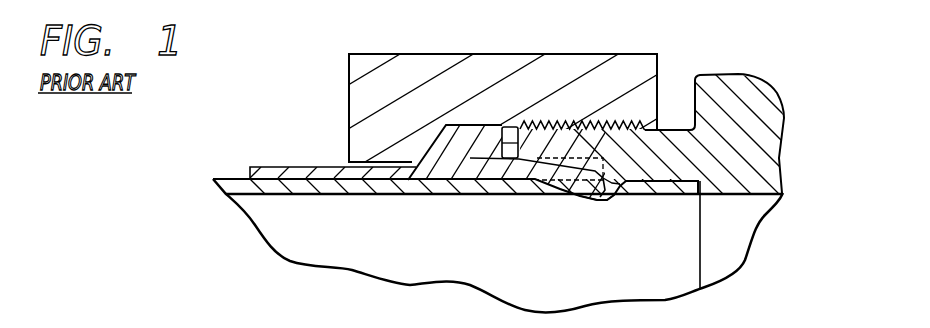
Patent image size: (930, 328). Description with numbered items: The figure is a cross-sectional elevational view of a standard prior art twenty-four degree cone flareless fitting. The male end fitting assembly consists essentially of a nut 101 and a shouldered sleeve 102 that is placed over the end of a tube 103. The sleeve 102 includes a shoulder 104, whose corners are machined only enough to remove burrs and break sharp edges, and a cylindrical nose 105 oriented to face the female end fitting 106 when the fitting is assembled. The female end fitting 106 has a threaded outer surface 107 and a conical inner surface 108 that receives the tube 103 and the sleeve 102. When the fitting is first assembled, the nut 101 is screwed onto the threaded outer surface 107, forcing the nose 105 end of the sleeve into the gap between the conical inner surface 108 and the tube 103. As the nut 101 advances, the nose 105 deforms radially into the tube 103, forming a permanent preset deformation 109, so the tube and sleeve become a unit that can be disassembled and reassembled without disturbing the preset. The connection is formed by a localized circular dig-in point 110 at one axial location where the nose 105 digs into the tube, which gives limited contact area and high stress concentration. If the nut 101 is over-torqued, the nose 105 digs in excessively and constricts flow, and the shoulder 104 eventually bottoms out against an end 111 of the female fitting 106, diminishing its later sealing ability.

The nut 101 is at (422, 67).
The shouldered sleeve 102 is at (307, 158).
The tube 103 is at (353, 250).
The shoulder 104 is at (457, 162).
The cylindrical nose 105 is at (535, 176).
The female end fitting 106 is at (752, 104).
The threaded outer surface 107 is at (628, 122).
The conical inner surface 108 is at (611, 185).
The preset deformation 109 is at (587, 201).
The dig-in point 110 is at (593, 196).
The end of the female fitting 111 is at (563, 163).